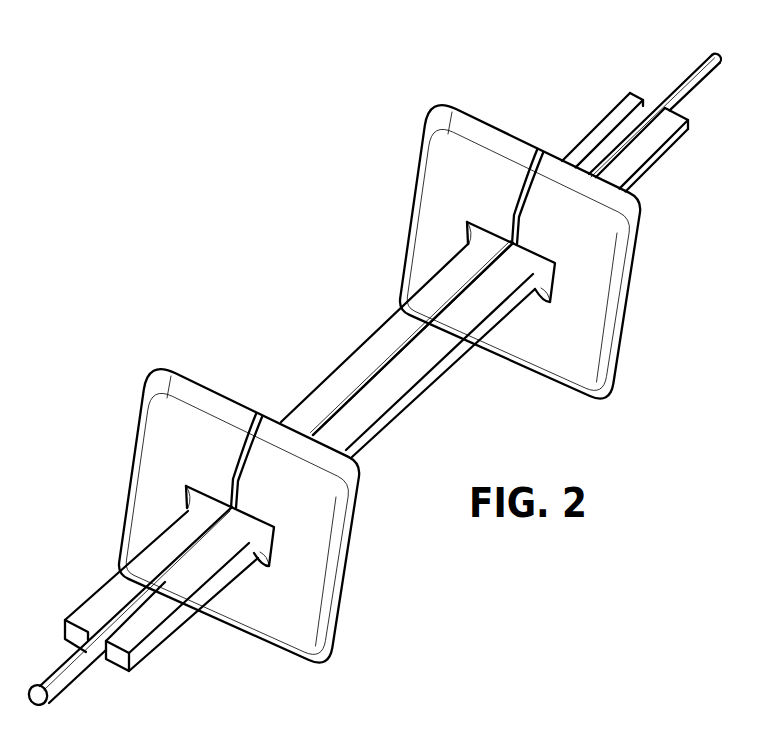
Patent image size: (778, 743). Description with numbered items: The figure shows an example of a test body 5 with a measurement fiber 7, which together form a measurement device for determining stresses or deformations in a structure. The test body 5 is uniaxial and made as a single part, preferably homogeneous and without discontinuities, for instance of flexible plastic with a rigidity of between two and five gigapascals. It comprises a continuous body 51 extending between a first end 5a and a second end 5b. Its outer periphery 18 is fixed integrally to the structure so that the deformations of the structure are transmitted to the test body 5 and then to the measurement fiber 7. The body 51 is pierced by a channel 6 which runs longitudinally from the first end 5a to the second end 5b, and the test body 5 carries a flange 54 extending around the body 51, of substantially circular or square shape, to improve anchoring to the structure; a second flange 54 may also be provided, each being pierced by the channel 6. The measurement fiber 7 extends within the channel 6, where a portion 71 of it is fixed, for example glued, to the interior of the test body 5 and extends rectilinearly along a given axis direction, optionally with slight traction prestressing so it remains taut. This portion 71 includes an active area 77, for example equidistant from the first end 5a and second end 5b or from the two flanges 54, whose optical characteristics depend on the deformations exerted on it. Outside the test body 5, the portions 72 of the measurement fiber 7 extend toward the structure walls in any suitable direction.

The test body 5 is at (390, 381).
The first end 5a is at (117, 660).
The second end 5b is at (643, 96).
The channel 6 is at (118, 606).
The measurement fiber 7 is at (706, 68).
The outer periphery 18 is at (659, 167).
The body 51 is at (427, 382).
The flange 54 is at (618, 307).
The portion of the measurement fiber 71 is at (182, 635).
The portions of the measurement fiber 72 is at (703, 82).
The active area 77 is at (384, 366).